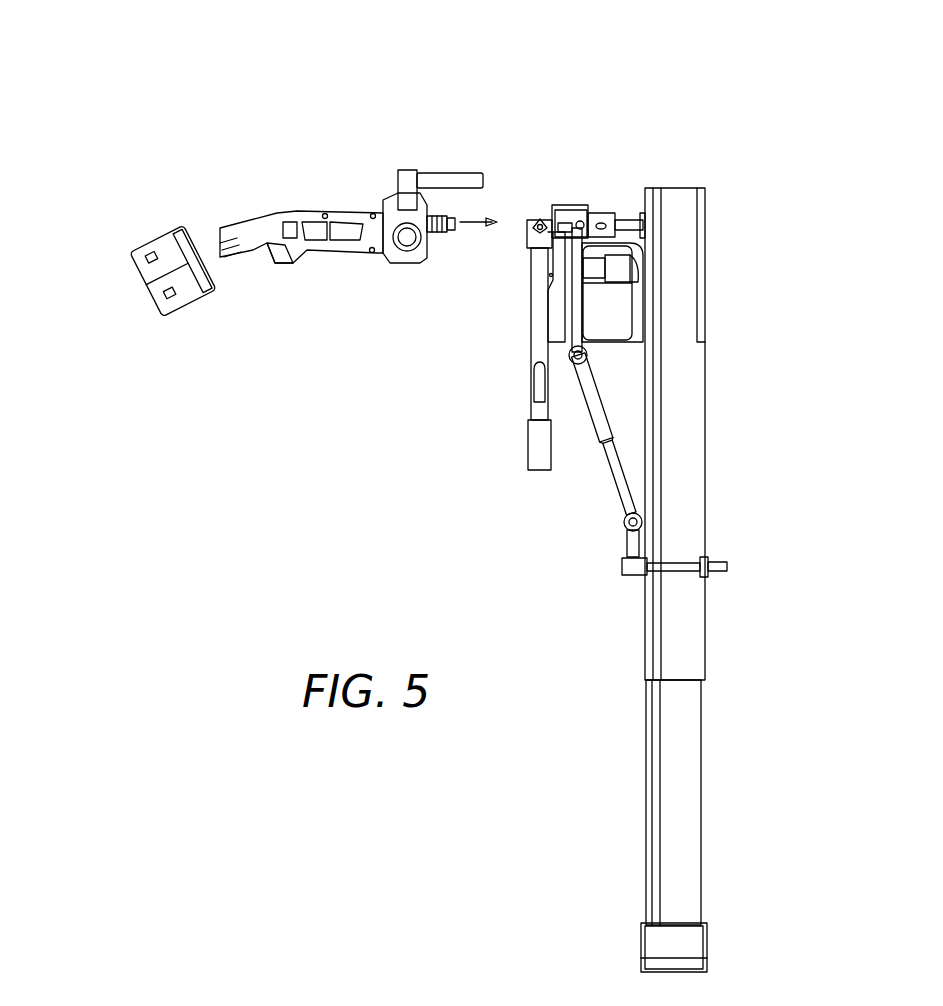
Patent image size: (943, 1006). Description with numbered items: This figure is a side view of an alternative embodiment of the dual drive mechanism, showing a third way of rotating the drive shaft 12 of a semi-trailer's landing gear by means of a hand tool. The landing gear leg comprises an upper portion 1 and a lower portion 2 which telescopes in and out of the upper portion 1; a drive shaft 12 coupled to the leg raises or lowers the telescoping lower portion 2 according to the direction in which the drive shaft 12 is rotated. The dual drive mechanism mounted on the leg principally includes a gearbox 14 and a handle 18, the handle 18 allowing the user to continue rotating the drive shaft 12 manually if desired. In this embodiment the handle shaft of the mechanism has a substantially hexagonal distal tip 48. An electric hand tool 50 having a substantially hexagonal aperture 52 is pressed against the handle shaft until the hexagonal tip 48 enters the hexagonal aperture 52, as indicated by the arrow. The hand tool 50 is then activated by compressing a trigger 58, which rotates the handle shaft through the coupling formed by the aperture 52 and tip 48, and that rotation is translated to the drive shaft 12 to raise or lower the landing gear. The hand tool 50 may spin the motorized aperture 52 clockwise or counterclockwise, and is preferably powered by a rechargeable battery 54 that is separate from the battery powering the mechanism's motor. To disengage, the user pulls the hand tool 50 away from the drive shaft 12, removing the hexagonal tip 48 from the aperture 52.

The upper portion 1 is at (677, 492).
The lower portion 2 is at (668, 797).
The drive shaft 12 is at (627, 220).
The gearbox 14 is at (568, 220).
The handle 18 is at (528, 440).
The hexagonal tip 48 is at (520, 222).
The electric hand tool 50 is at (343, 212).
The hexagonal aperture 52 is at (448, 233).
The rechargeable battery 54 is at (142, 250).
The trigger 58 is at (275, 263).